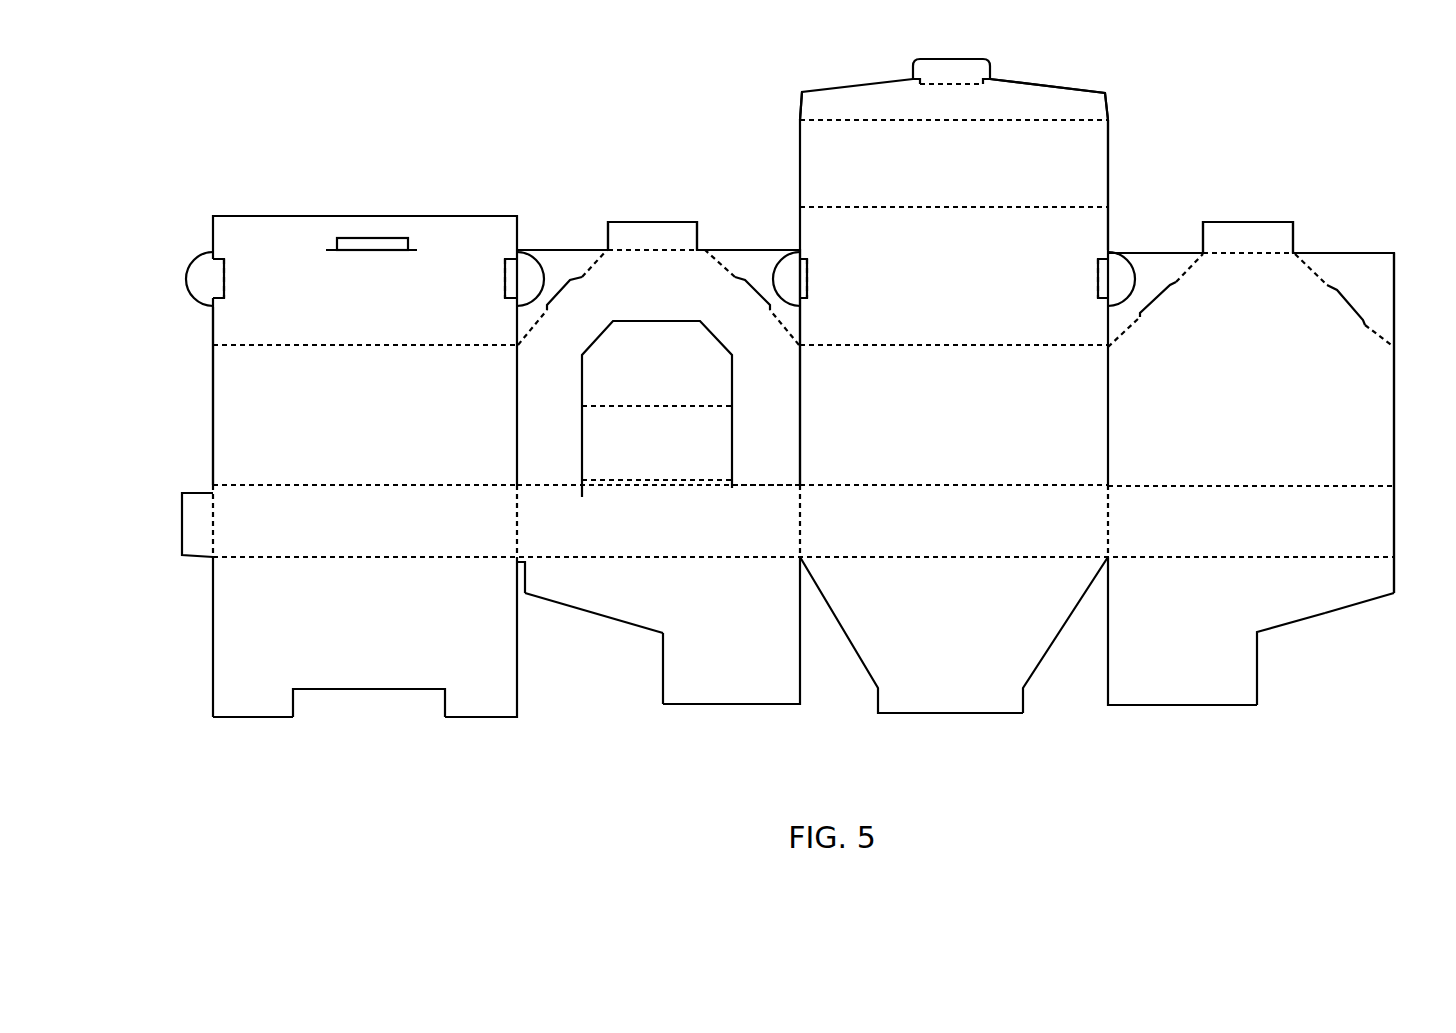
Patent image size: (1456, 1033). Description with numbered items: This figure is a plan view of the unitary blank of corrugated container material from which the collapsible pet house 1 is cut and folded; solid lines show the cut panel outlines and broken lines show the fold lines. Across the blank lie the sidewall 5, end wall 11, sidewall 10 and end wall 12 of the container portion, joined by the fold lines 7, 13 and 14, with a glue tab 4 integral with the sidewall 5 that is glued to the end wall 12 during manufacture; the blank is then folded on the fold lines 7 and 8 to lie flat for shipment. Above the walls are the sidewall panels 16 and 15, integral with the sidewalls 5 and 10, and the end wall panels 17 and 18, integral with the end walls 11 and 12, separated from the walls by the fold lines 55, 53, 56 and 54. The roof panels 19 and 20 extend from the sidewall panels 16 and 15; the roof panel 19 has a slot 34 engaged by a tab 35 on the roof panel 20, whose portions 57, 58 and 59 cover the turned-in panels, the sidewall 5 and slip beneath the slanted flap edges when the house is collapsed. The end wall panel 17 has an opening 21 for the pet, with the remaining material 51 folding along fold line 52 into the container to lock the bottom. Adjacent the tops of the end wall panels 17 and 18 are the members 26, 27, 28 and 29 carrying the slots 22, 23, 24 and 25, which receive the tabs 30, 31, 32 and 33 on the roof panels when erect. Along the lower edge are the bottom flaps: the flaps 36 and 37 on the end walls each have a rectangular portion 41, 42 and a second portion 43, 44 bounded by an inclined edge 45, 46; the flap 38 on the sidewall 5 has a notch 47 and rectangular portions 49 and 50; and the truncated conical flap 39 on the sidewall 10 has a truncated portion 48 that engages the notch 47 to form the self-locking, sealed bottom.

The pet house 1 is at (1300, 122).
The tab 4 is at (192, 538).
The sidewall 5 is at (339, 537).
The fold line 7 is at (806, 520).
The fold line 8 is at (212, 512).
The sidewall 10 is at (947, 534).
The end wall 11 is at (622, 537).
The end wall 12 is at (1239, 534).
The fold line 13 is at (1100, 520).
The fold line 14 is at (527, 520).
The sidewall panel 15 is at (942, 427).
The sidewall panel 16 is at (232, 398).
The end wall panel 17 is at (603, 278).
The end wall panel 18 is at (1380, 433).
The roof panel 19 is at (232, 235).
The roof panel 20 is at (1114, 137).
The opening 21 is at (673, 347).
The slot 22 is at (572, 277).
The slot 23 is at (740, 270).
The slot 24 is at (1168, 255).
The slot 25 is at (1347, 298).
The member 26 is at (535, 252).
The member 27 is at (748, 280).
The member 28 is at (1157, 263).
The member 29 is at (1335, 268).
The tab 30 is at (200, 280).
The tab 31 is at (527, 265).
The tab 32 is at (783, 262).
The tab 33 is at (1122, 250).
The slot 34 is at (352, 243).
The tab 35 is at (952, 70).
The flap 36 is at (682, 725).
The flap 37 is at (1152, 715).
The flap 38 is at (228, 637).
The flap 39 is at (1032, 633).
The rectangular portion 41 is at (745, 677).
The rectangular portion 42 is at (1193, 677).
The second portion 43 is at (617, 645).
The second portion 44 is at (1307, 635).
The inclined edge 45 is at (593, 602).
The inclined edge 46 is at (1368, 600).
The notch 47 is at (367, 688).
The truncated portion 48 is at (933, 673).
The rectangular portion 49 is at (245, 700).
The rectangular portion 50 is at (482, 692).
The material 51 is at (632, 457).
The fold line 52 is at (678, 478).
The fold line 53 is at (1212, 487).
The fold line 54 is at (748, 485).
The fold line 55 is at (302, 483).
The fold line 56 is at (866, 485).
The portion 57 is at (944, 284).
The portion 58 is at (810, 160).
The portion 59 is at (1045, 108).